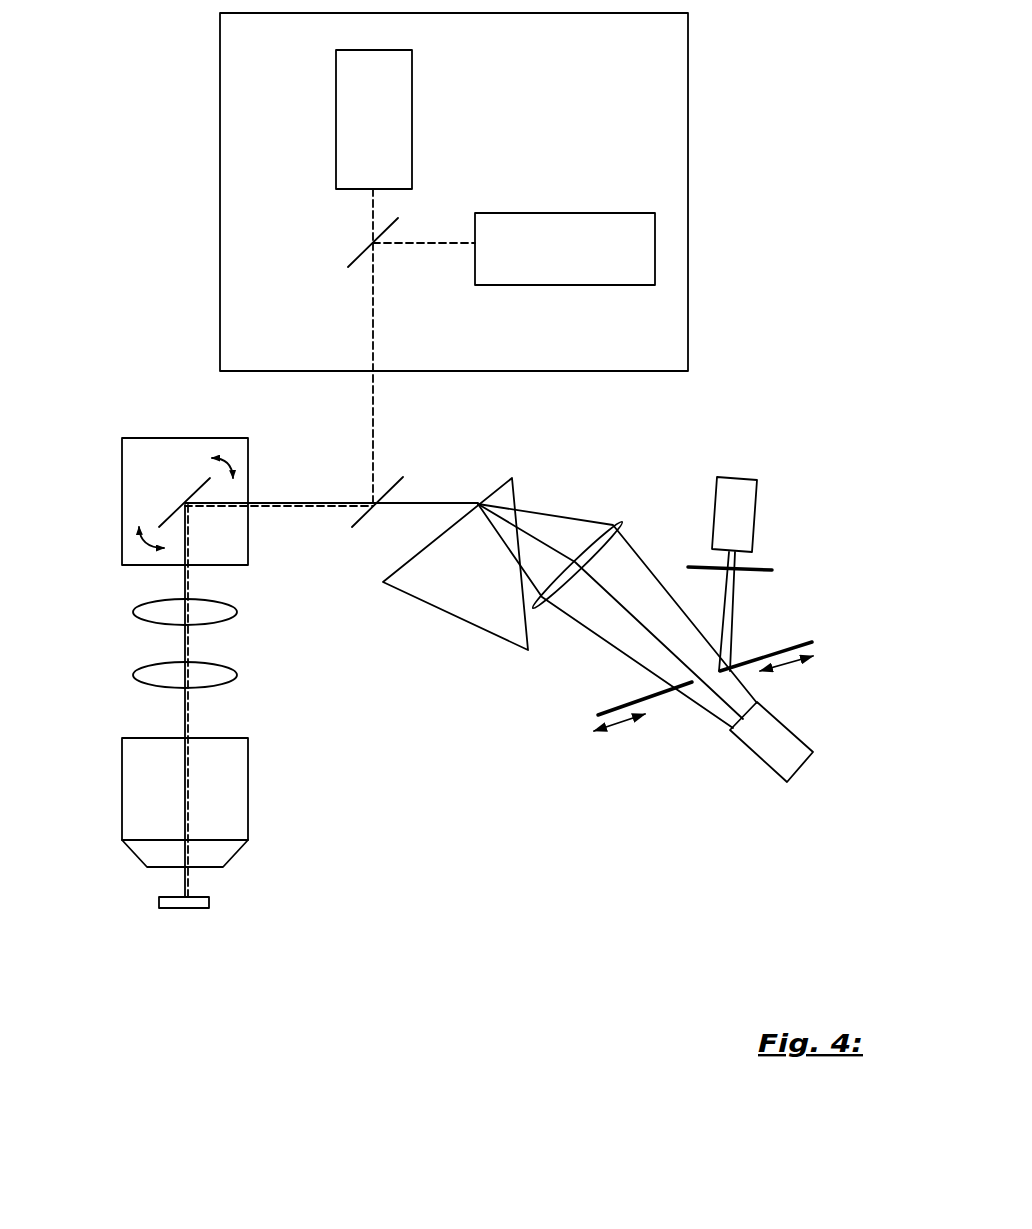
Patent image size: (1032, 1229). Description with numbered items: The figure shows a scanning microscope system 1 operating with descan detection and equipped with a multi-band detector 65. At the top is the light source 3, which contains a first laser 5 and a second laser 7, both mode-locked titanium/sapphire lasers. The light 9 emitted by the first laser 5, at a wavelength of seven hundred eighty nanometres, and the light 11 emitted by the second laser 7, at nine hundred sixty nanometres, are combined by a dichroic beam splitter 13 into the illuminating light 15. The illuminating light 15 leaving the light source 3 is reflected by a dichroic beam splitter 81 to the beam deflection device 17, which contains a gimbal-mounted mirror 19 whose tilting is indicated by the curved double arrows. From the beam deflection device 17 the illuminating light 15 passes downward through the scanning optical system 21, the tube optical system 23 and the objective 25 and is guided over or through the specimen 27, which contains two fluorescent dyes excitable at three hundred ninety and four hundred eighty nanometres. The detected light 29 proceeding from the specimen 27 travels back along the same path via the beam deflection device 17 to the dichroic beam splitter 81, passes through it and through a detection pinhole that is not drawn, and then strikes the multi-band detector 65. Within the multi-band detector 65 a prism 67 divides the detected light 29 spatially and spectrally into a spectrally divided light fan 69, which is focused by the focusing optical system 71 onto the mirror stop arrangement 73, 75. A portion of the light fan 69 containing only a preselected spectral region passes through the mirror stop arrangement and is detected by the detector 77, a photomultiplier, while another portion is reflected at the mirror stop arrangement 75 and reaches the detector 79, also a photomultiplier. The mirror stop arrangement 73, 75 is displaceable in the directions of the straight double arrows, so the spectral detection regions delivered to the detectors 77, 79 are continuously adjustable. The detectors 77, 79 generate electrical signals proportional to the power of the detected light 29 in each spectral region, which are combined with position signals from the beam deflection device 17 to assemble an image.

The scanning microscope system 1 is at (766, 370).
The light source 3 is at (233, 37).
The first laser 5 is at (398, 97).
The second laser 7 is at (573, 254).
The light emitted by first laser 9 is at (373, 227).
The light emitted by second laser 11 is at (420, 245).
The dichroic beam splitter 13 is at (350, 266).
The illuminating light 15 is at (375, 448).
The beam deflection device 17 is at (147, 463).
The gimbal-mounted mirror 19 is at (172, 508).
The scanning optical system 21 is at (210, 612).
The tube optical system 23 is at (210, 675).
The objective 25 is at (145, 767).
The specimen 27 is at (170, 898).
The detected light 29 is at (410, 500).
The multi-band detector 65 is at (549, 742).
The prism 67 is at (477, 597).
The spectrally divided light fan 69 is at (547, 538).
The focusing optical system 71 is at (618, 520).
The mirror stop arrangement 73 is at (653, 702).
The mirror stop arrangement 75 is at (768, 650).
The detector 77 is at (778, 740).
The detector 79 is at (726, 488).
The dichroic beam splitter 81 is at (353, 527).